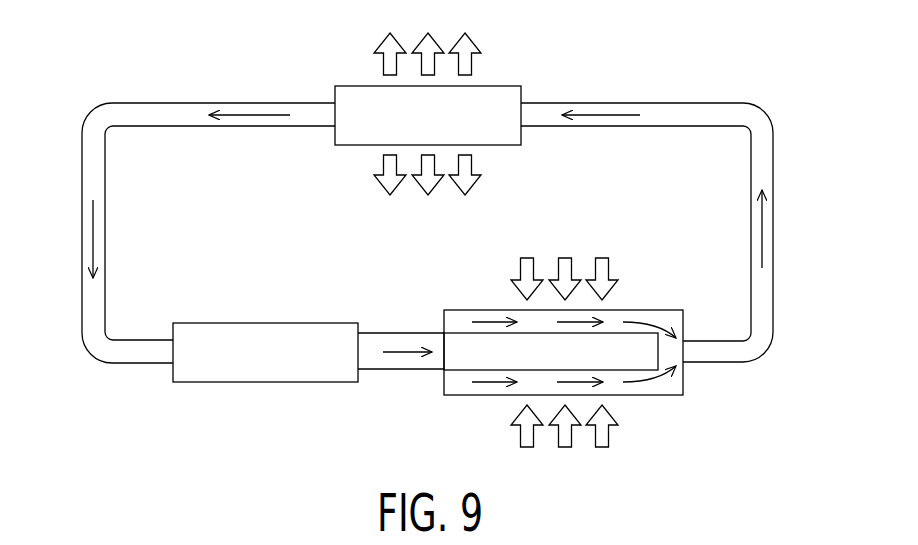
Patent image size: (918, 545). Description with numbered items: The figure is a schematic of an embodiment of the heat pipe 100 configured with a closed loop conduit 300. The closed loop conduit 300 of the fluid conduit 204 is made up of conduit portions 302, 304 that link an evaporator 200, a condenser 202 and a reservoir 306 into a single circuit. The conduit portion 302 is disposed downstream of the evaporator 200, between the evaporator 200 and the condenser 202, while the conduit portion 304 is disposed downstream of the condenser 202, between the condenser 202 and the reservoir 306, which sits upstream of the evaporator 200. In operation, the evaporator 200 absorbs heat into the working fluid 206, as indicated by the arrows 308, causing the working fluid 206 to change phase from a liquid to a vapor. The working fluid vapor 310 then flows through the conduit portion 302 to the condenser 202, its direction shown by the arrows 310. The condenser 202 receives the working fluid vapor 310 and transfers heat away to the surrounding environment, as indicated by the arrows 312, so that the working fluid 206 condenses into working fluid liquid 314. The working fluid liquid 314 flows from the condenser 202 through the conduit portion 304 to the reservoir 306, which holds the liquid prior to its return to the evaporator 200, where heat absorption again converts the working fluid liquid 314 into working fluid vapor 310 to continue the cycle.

The heat pipe 100 is at (720, 58).
The evaporator 200 is at (643, 395).
The condenser 202 is at (489, 86).
The fluid conduit 204 is at (775, 295).
The working fluid 206 is at (750, 350).
The closed loop conduit 300 is at (84, 107).
The conduit portion 302 is at (775, 165).
The conduit portion 304 is at (82, 302).
The reservoir 306 is at (265, 322).
The arrows indicating heat absorption 308 is at (607, 432).
The working fluid vapor 310 is at (762, 237).
The arrows indicating heat rejection 312 is at (472, 163).
The working fluid liquid 314 is at (255, 115).